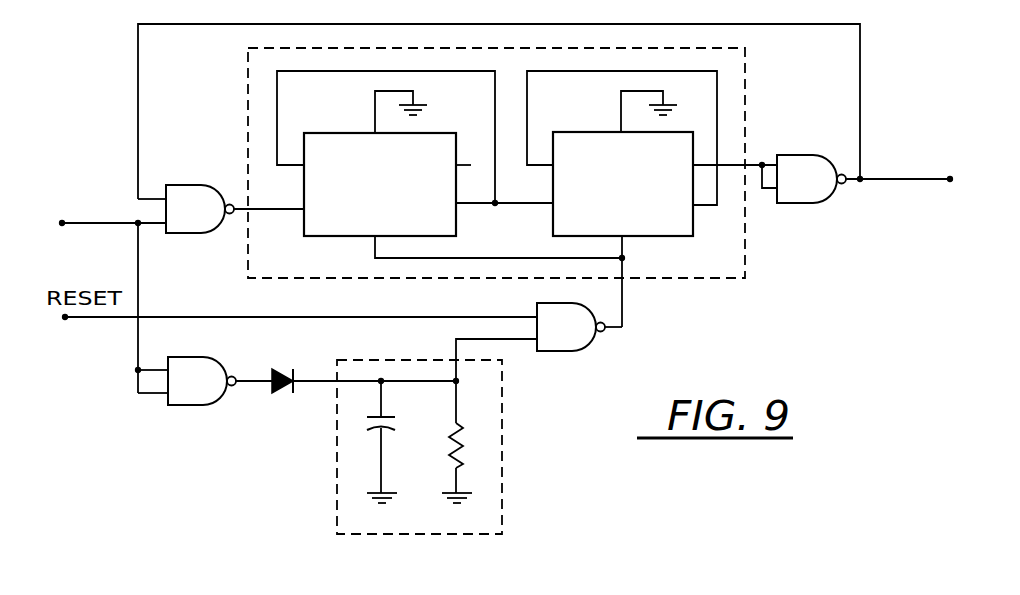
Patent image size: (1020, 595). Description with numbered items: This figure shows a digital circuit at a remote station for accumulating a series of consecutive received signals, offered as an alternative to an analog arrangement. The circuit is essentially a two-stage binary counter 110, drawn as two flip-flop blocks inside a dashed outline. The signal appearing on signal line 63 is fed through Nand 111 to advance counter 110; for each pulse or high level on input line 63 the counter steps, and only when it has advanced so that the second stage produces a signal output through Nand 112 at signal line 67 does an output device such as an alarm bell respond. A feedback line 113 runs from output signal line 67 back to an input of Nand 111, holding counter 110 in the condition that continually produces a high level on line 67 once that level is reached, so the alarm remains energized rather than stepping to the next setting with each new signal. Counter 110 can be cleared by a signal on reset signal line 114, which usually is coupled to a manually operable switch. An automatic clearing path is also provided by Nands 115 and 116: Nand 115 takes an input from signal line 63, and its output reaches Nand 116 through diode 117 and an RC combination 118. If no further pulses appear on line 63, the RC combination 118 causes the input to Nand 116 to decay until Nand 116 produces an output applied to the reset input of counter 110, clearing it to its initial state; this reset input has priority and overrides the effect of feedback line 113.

The signal line 63 is at (114, 222).
The output signal line 67 is at (923, 182).
The two-stage binary counter 110 is at (747, 72).
The Nand 111 is at (205, 183).
The Nand 112 is at (828, 198).
The feedback line 113 is at (862, 71).
The reset signal line 114 is at (102, 320).
The Nand 115 is at (198, 355).
The Nand 116 is at (580, 350).
The diode 117 is at (275, 398).
The RC combination 118 is at (502, 425).